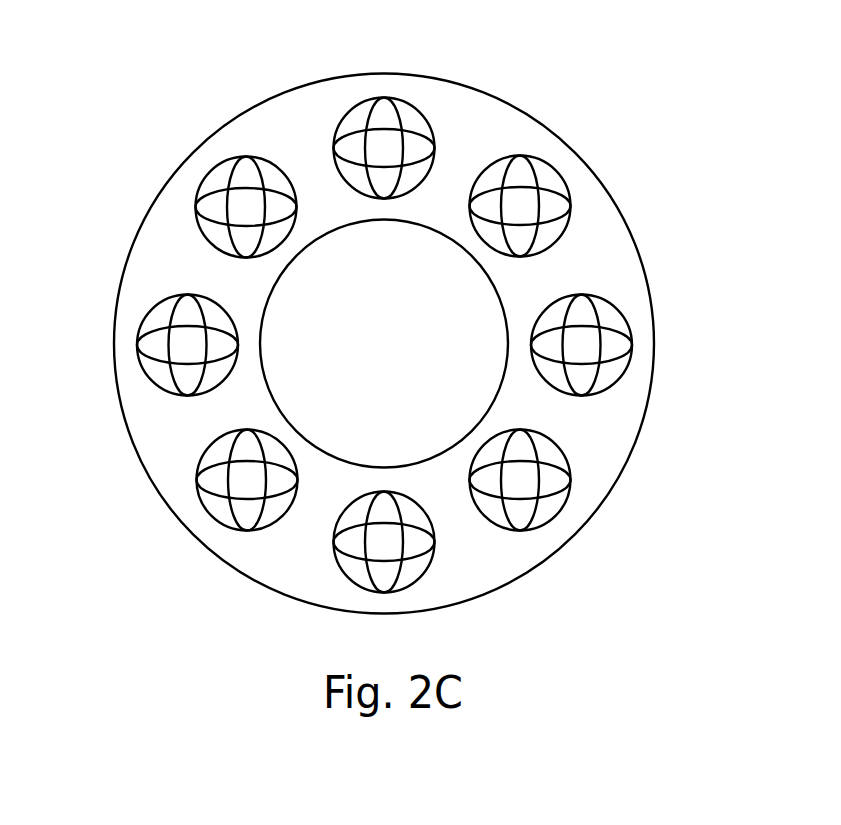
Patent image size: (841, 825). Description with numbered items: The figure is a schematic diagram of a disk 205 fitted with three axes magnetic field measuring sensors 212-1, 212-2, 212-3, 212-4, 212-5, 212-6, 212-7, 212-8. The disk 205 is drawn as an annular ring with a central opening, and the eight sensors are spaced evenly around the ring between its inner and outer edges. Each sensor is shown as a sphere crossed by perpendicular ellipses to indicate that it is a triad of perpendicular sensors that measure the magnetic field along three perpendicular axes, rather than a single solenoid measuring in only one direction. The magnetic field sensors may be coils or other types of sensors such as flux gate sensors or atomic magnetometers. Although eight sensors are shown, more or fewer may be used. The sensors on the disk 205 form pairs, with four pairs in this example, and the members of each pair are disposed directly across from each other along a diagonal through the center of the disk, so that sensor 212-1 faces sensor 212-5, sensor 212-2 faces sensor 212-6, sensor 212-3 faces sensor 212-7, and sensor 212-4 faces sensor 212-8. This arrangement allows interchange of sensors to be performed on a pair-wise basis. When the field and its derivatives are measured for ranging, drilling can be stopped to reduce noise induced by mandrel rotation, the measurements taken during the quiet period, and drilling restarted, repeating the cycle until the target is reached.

The disk 205 is at (473, 113).
The three axes magnetic field measuring sensor 212-1 is at (369, 98).
The three axes magnetic field measuring sensor 212-2 is at (202, 180).
The three axes magnetic field measuring sensor 212-3 is at (138, 330).
The three axes magnetic field measuring sensor 212-4 is at (200, 456).
The three axes magnetic field measuring sensor 212-5 is at (337, 560).
The three axes magnetic field measuring sensor 212-6 is at (566, 456).
The three axes magnetic field measuring sensor 212-7 is at (621, 312).
The three axes magnetic field measuring sensor 212-8 is at (550, 165).